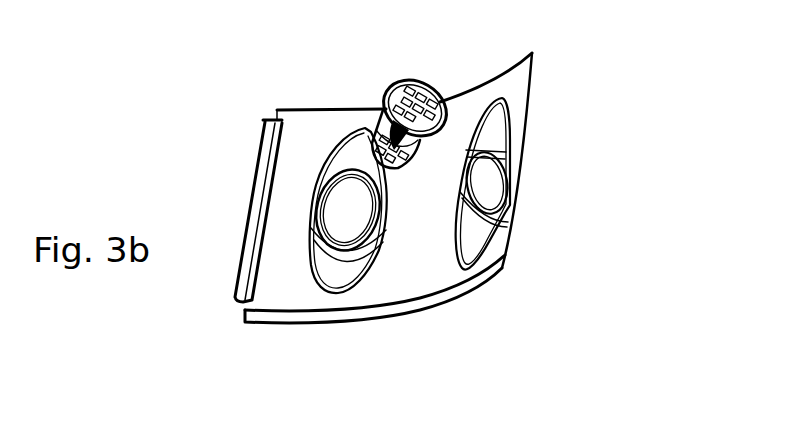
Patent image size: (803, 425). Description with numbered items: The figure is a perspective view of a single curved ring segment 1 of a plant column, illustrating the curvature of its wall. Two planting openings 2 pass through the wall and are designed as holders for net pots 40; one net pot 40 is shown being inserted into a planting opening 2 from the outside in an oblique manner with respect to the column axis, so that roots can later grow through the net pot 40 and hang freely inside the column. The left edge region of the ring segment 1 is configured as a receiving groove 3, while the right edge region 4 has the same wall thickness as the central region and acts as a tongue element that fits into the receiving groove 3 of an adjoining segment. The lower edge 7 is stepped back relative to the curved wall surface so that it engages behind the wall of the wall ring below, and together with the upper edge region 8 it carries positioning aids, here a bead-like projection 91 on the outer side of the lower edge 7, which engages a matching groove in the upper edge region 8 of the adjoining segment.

The ring segment 1 is at (572, 272).
The upper edge region 8 is at (325, 118).
The right edge region 4 is at (517, 133).
The lower edge 7 is at (450, 292).
The bead-like projection 91 is at (407, 304).
The receiving groove 3 is at (268, 176).
The planting opening 2 is at (351, 213).
The net pot 40 is at (410, 84).